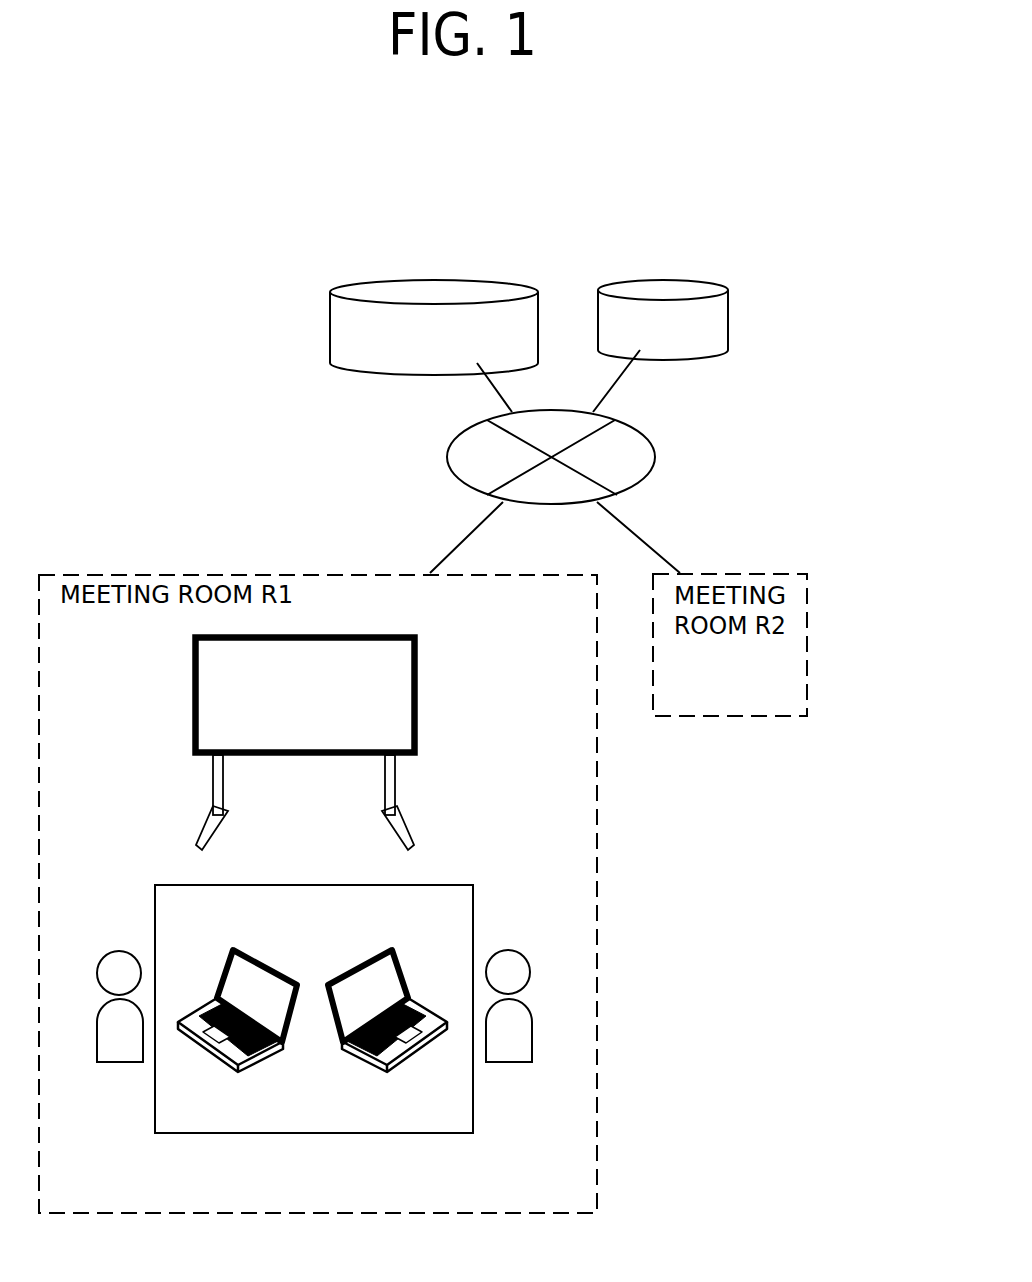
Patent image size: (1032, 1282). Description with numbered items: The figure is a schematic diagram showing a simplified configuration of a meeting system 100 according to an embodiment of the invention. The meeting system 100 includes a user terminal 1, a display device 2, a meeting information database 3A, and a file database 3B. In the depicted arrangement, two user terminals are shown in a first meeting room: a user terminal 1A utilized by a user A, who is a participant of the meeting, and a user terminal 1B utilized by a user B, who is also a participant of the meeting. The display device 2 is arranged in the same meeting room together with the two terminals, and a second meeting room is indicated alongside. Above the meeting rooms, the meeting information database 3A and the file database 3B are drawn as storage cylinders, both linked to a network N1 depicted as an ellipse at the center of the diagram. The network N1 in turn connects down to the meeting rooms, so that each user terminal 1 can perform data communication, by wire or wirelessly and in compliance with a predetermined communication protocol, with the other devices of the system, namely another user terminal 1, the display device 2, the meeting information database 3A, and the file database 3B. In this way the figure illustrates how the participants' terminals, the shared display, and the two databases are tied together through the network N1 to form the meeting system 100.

The meeting system 100 is at (845, 252).
The user terminal 1 is at (312, 1070).
The user terminal 1A is at (220, 1057).
The user terminal 1B is at (363, 1050).
The display device 2 is at (418, 697).
The meeting information database 3A is at (438, 280).
The file database 3B is at (667, 278).
The network N1 is at (447, 455).
The user A is at (120, 1024).
The user B is at (509, 1023).